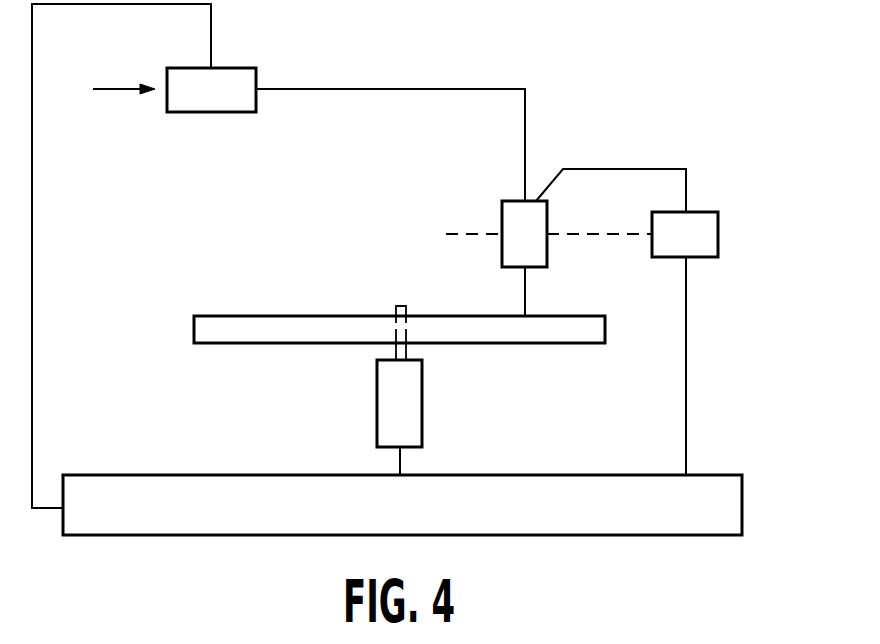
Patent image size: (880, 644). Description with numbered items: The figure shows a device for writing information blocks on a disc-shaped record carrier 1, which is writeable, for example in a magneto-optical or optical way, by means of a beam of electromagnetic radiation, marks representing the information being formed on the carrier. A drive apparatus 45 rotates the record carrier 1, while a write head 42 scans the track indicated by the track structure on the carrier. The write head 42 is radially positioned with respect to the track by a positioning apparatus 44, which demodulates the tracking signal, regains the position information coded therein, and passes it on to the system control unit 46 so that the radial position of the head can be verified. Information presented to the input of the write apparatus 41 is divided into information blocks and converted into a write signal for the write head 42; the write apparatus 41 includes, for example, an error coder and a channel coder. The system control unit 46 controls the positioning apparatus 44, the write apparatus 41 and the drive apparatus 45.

The record carrier 1 is at (545, 333).
The write apparatus 41 is at (190, 76).
The write head 42 is at (540, 257).
The positioning apparatus 44 is at (712, 245).
The drive apparatus 45 is at (415, 418).
The system control unit 46 is at (623, 485).